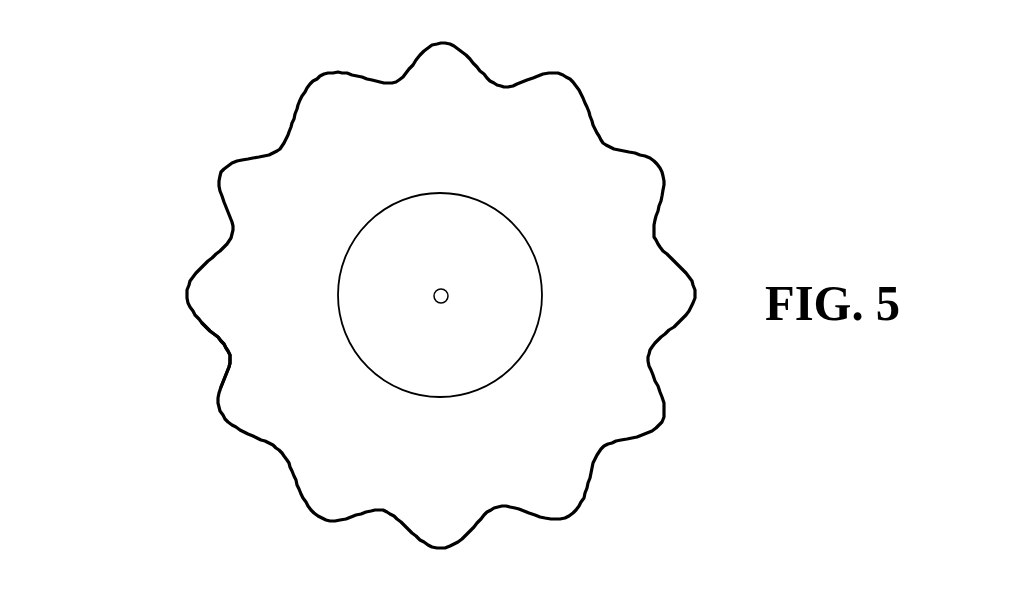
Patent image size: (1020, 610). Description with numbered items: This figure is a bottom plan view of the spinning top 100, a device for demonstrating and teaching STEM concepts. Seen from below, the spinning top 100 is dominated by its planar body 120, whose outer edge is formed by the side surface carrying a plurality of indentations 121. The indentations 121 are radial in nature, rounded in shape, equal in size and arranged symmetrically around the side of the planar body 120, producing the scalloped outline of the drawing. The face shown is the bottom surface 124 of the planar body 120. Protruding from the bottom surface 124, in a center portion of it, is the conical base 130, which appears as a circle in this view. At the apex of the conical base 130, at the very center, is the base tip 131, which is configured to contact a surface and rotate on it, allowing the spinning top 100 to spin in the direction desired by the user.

The spinning top 100 is at (188, 113).
The planar body 120 is at (217, 180).
The indentations 121 is at (227, 353).
The bottom surface 124 is at (582, 413).
The conical base 130 is at (388, 263).
The base tip 131 is at (432, 296).